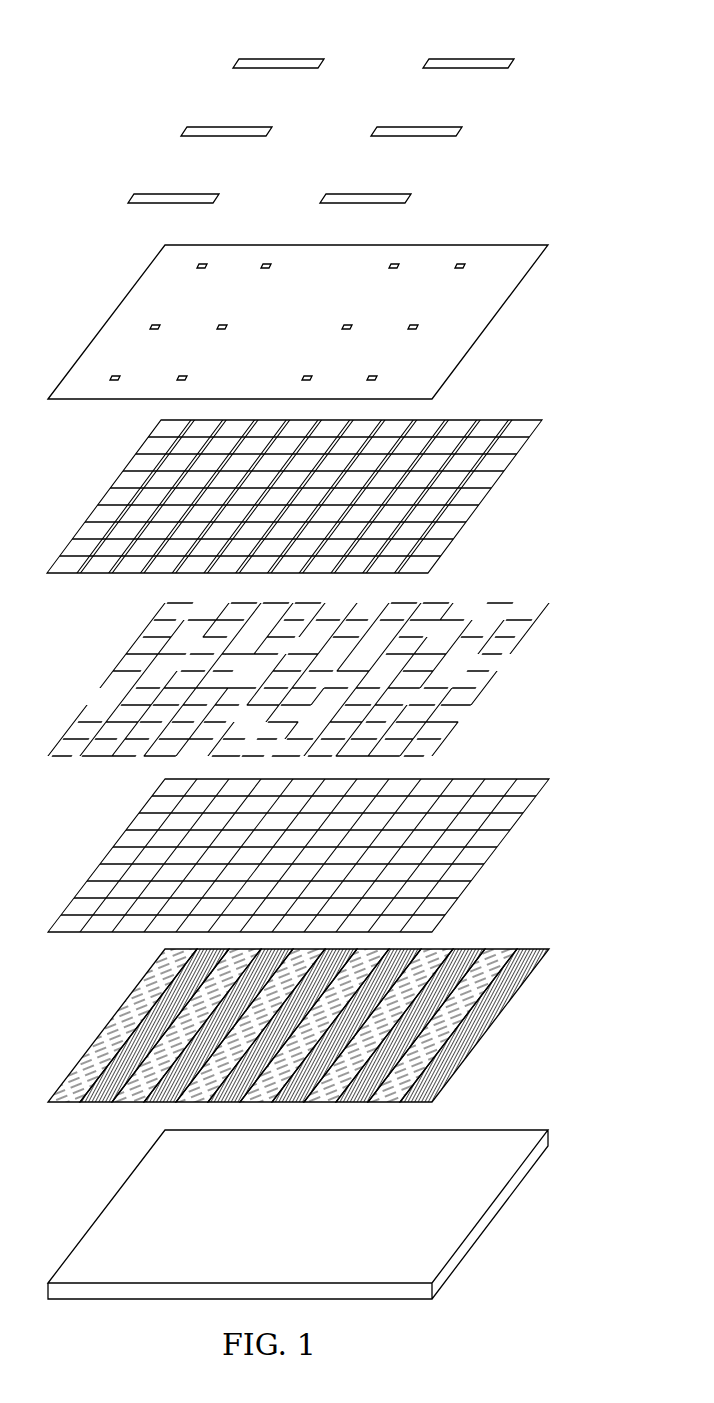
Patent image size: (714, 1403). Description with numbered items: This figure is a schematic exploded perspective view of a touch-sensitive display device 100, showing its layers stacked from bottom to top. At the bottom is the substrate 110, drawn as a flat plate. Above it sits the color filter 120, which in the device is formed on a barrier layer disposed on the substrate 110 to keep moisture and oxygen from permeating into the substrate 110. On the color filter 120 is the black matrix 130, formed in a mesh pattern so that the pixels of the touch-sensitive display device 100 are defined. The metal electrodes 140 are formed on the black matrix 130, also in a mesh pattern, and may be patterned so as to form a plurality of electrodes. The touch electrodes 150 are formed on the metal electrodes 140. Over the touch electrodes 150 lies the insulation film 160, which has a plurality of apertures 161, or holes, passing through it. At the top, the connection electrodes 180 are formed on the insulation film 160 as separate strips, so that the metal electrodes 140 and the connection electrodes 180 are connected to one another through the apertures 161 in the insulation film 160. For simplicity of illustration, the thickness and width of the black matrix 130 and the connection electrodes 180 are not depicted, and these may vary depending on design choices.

The touch-sensitive display device 100 is at (128, 28).
The substrate 110 is at (511, 1180).
The color filter 120 is at (497, 1017).
The black matrix 130 is at (502, 838).
The metal electrodes 140 is at (493, 676).
The touch electrodes 150 is at (499, 478).
The insulation film 160 is at (320, 322).
The apertures 161 is at (151, 327).
The connection electrodes 180 is at (462, 129).